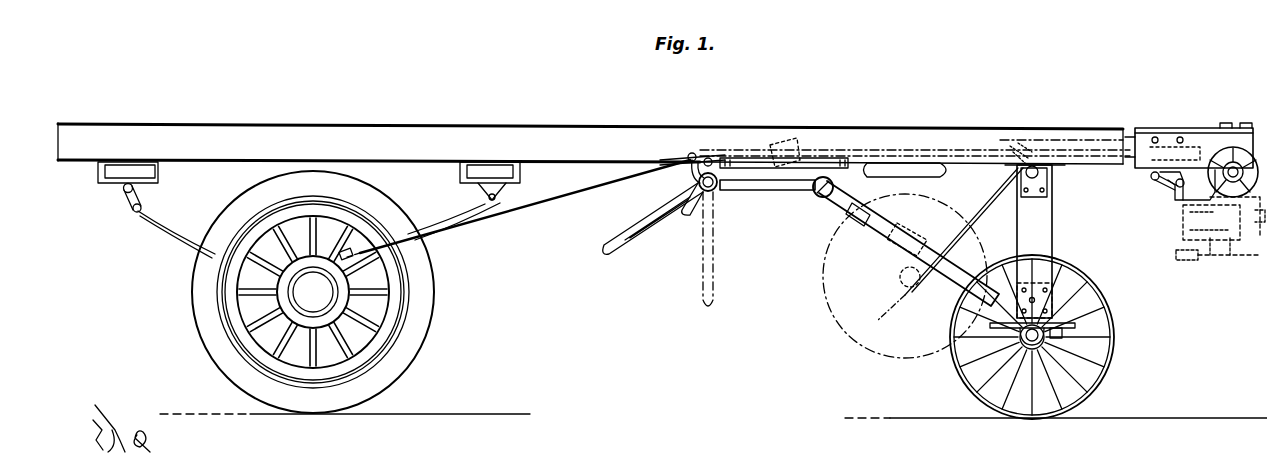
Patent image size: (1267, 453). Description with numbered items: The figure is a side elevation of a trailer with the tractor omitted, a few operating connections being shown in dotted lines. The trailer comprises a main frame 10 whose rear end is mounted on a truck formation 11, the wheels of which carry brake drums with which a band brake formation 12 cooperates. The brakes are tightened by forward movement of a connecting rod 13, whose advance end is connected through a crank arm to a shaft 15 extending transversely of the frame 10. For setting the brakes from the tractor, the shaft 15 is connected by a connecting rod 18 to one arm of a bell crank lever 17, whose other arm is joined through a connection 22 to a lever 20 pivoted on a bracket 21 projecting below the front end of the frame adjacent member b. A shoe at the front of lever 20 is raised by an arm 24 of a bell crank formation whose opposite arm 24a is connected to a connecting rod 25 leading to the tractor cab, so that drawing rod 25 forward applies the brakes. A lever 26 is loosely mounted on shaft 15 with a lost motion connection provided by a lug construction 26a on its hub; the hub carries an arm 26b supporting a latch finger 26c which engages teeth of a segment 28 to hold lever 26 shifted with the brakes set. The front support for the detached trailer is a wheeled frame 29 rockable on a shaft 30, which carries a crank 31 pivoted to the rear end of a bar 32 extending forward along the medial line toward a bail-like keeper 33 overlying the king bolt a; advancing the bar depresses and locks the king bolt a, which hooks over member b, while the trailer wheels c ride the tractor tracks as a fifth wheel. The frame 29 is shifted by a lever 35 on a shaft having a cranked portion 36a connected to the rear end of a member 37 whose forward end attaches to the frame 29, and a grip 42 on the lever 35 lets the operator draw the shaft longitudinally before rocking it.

The main frame 10 is at (684, 108).
The truck formation 11 is at (436, 300).
The band brake formation 12 is at (375, 305).
The connecting rod 13 is at (550, 203).
The shaft 15 is at (716, 190).
The bell crank lever 17 is at (1170, 128).
The connecting rod 18 is at (905, 152).
The lever 20 is at (1182, 183).
The bracket 21 is at (1178, 198).
The connection 22 is at (1152, 178).
The arm 24 is at (1208, 258).
The opposite arm 24a is at (1175, 252).
The connecting rod 25 is at (1230, 258).
The lever 26 is at (634, 229).
The lug construction 26a is at (702, 198).
The arm 26b is at (692, 178).
The latch finger 26c is at (688, 160).
The segment 28 is at (745, 165).
The wheeled frame 29 is at (1050, 222).
The shaft 30 is at (1050, 186).
The crank 31 is at (1030, 150).
The bar 32 is at (1097, 143).
The keeper 33 is at (1228, 124).
The lever 35 is at (898, 177).
The cranked portion 36a is at (832, 240).
The member 37 is at (945, 292).
The grip 42 is at (816, 198).
The king bolt a is at (1248, 198).
The member b is at (1232, 150).
The wheels c is at (1200, 208).